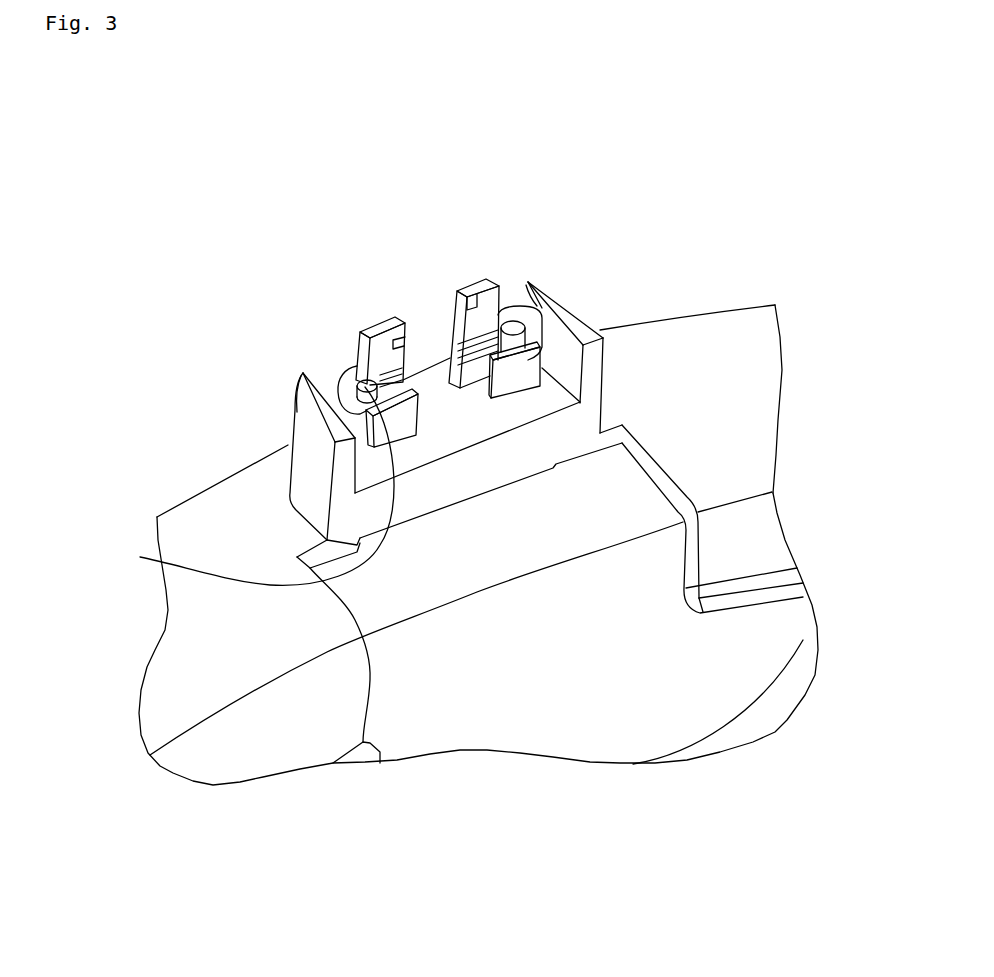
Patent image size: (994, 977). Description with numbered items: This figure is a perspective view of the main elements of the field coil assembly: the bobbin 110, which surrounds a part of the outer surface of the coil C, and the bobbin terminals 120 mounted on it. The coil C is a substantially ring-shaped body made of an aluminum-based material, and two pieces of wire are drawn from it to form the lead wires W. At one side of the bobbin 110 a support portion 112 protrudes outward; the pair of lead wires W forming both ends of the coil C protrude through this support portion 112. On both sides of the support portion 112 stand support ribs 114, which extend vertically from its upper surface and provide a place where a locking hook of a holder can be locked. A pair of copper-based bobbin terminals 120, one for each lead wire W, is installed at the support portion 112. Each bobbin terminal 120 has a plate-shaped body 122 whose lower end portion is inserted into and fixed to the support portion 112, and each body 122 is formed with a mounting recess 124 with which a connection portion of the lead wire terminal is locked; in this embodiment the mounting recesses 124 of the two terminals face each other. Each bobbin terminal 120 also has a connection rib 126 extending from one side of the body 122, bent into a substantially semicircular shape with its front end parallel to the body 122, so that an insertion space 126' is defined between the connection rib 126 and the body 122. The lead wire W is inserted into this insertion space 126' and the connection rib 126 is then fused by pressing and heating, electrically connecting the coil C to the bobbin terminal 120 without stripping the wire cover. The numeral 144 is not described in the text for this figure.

The bobbin 110 is at (207, 640).
The support portion 112 is at (500, 455).
The support ribs 114 is at (592, 395).
The bobbin terminal 120 is at (335, 258).
The body 122 is at (377, 353).
The mounting recess 124 is at (408, 334).
The connection rib 126 is at (447, 368).
The insertion space 126' is at (423, 298).
The outer face of side wall 144 is at (305, 478).
The lead wire w is at (643, 143).
The coil C is at (430, 723).